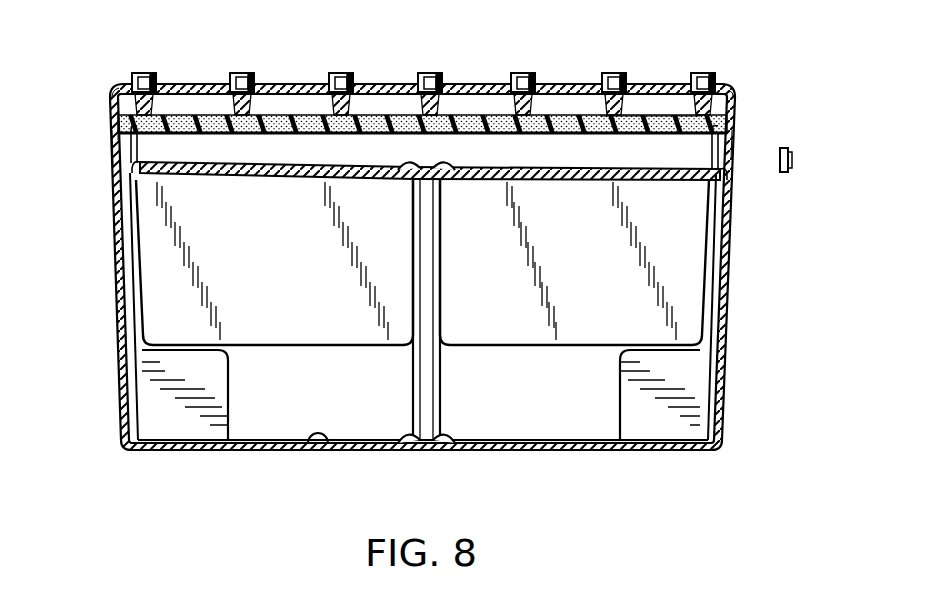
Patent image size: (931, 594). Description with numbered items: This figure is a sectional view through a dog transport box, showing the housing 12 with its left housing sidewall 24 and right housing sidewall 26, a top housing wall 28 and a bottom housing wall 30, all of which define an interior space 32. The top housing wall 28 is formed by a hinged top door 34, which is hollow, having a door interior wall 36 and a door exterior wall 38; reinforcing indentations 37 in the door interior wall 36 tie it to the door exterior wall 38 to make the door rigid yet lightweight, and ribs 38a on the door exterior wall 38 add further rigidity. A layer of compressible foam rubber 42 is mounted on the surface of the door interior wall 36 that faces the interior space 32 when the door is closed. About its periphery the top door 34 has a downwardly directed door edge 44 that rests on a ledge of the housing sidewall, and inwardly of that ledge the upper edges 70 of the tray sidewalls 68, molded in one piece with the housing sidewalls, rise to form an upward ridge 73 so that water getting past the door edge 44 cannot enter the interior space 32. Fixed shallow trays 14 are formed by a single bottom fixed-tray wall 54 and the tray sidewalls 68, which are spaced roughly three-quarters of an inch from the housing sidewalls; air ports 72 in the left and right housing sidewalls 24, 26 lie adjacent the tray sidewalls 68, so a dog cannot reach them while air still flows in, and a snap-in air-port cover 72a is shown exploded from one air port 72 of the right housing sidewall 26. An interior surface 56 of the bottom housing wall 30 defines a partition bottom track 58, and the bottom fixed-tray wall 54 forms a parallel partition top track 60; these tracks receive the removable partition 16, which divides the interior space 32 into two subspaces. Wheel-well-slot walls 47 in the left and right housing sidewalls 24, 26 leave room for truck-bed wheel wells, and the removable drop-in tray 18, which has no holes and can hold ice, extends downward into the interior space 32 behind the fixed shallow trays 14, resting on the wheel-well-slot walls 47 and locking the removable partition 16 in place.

The housing 12 is at (724, 381).
The fixed shallow trays 14 is at (272, 180).
The removable partition 16 is at (433, 398).
The removable drop-in tray 18 is at (439, 262).
The left housing sidewall 24 is at (112, 247).
The right housing sidewall 26 is at (726, 310).
The top housing wall 28 is at (575, 88).
The bottom housing wall 30 is at (588, 450).
The interior space 32 is at (700, 232).
The hinged top door 34 is at (388, 86).
The door interior wall 36 is at (216, 92).
The reinforcing indentations 37 is at (553, 88).
The door exterior wall 38 is at (284, 88).
The ribs 38a is at (425, 78).
The foam rubber 42 is at (196, 95).
The door edge 44 is at (116, 133).
The wheel-well-slot walls 47 is at (217, 387).
The bottom fixed-tray wall 54 is at (568, 182).
The interior surface 56 is at (316, 450).
The partition bottom track 58 is at (410, 428).
The partition top track 60 is at (443, 183).
The tray sidewalls 68 is at (668, 90).
The upper edges 70 is at (738, 93).
The air ports 72 is at (112, 162).
The air-port covers 72a is at (793, 158).
The upward ridge 73 is at (114, 93).